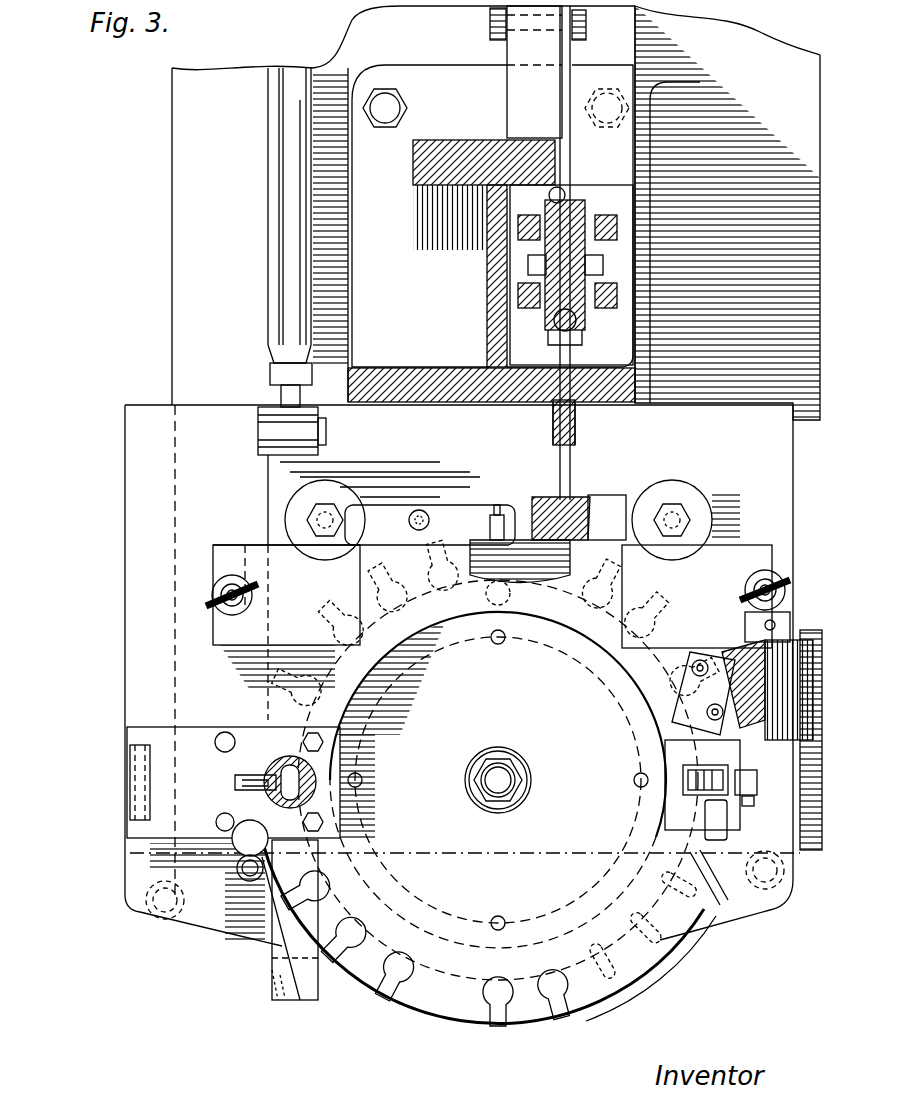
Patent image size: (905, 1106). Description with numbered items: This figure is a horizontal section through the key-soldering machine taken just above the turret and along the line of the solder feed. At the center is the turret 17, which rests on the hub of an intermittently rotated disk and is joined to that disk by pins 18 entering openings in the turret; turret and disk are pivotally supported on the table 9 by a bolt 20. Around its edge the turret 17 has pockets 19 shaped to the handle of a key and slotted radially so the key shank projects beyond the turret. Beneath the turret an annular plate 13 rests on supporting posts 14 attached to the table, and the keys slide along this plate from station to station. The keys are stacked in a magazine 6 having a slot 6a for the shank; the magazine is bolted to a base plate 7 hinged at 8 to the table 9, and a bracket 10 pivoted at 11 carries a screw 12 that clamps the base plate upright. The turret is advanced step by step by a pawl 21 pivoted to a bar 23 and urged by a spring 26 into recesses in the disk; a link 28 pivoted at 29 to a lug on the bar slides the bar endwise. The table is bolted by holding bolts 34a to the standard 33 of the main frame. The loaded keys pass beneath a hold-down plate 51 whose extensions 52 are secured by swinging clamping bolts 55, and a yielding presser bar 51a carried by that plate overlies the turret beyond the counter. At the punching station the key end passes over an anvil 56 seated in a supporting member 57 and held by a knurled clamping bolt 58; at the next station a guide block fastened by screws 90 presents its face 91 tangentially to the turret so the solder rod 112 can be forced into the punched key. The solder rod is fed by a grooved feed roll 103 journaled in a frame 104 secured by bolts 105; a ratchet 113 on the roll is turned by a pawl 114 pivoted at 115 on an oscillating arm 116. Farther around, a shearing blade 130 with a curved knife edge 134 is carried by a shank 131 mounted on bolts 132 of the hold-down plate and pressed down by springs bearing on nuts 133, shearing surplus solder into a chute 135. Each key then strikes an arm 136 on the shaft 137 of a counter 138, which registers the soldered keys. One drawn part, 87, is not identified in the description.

The link 28 is at (285, 186).
The pivot 29 is at (260, 428).
The bar 23 is at (270, 470).
The pivot 115 is at (507, 34).
The arm 116 is at (490, 24).
The pawl 114 is at (572, 82).
The standard 33 is at (452, 150).
The frame 104 is at (540, 228).
The feed roll 103 is at (555, 252).
The ratchet 113 is at (568, 268).
The solder rod 112 is at (560, 314).
The bolts 105 is at (572, 326).
The holding bolts 34a is at (330, 512).
The knurled clamping bolt 58 is at (419, 510).
The anvil 56 is at (452, 505).
The supporting member 57 is at (500, 505).
The pad 87 is at (512, 555).
The screws 90 is at (562, 500).
The face of the guide block 91 is at (607, 517).
The extensions 52 is at (224, 545).
The swinging clamping bolts 55 is at (222, 590).
The turret 17 is at (498, 780).
The supporting posts 14 is at (497, 607).
The pins 18 is at (503, 640).
The bolt 20 is at (500, 762).
The annular plate 13 is at (425, 668).
The pockets 19 is at (506, 1032).
The hold-down plate 51 is at (612, 640).
The yielding presser bar 51a is at (705, 922).
The table 9 is at (778, 920).
The shearing blade 130 is at (750, 705).
The curved cutting knife edge 134 is at (732, 672).
The chute 135 is at (751, 618).
The bolts 132 is at (700, 662).
The shank portion 131 is at (692, 668).
The nuts 133 is at (707, 713).
The counter 138 is at (680, 760).
The shaft 137 is at (755, 778).
The arm 136 is at (752, 805).
The supporting base plate 7 is at (160, 818).
The hinge 8 is at (135, 792).
The magazine 6 is at (302, 775).
The slot 6a is at (240, 778).
The screw 12 is at (251, 838).
The bracket 10 is at (245, 862).
The pivot 11 is at (250, 880).
The pawl 21 is at (292, 938).
The spring 26 is at (277, 1008).